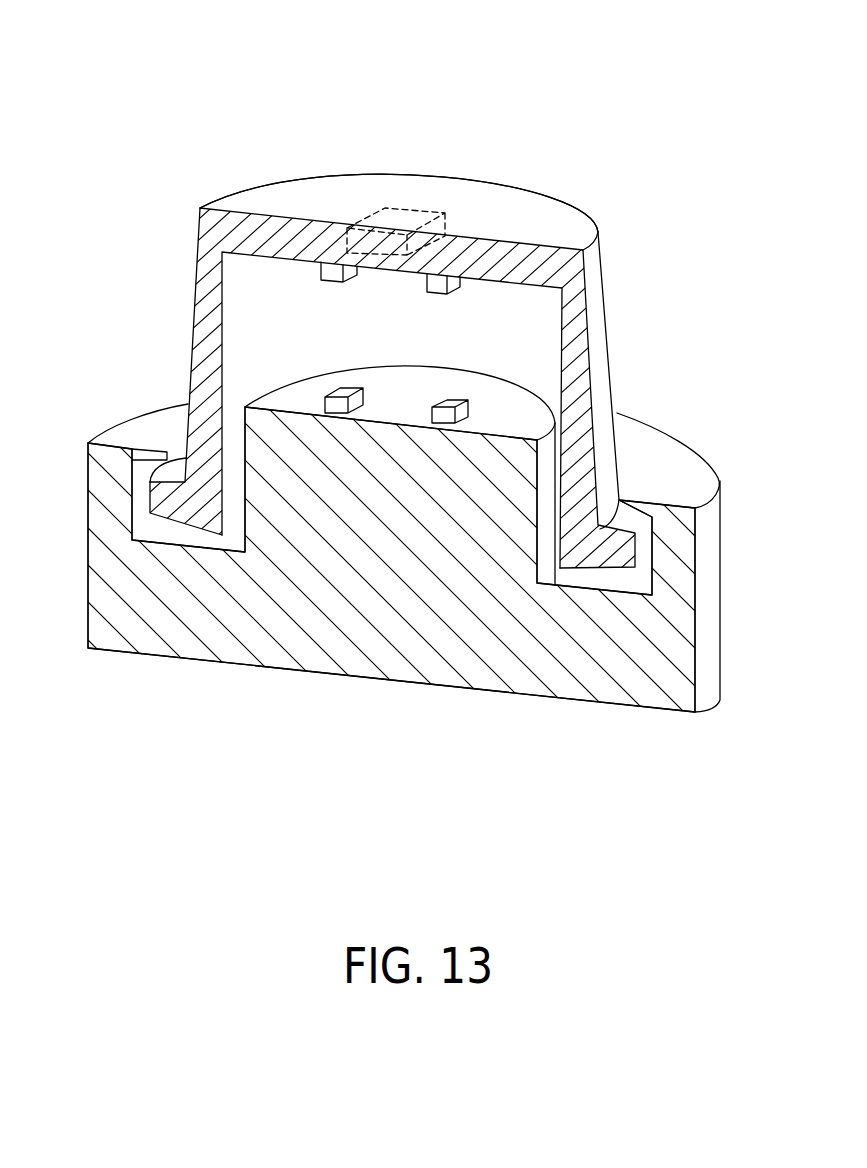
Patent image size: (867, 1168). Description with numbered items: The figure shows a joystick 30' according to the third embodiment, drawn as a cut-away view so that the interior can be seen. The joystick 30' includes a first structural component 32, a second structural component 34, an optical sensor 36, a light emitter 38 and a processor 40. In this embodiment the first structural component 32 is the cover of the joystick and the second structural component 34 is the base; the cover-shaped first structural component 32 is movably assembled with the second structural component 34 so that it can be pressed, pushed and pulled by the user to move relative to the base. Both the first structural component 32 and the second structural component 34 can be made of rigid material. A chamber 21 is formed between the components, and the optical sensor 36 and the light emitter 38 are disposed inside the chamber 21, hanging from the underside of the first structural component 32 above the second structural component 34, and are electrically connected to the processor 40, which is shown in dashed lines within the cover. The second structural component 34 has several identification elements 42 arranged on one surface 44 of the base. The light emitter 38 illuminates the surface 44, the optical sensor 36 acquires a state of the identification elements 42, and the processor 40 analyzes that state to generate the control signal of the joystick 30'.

The joystick 30' is at (439, 360).
The chamber 21 is at (527, 331).
The first structural component 32 is at (557, 221).
The second structural component 34 is at (180, 638).
The optical sensor 36 is at (334, 267).
The light emitter 38 is at (441, 283).
The processor 40 is at (395, 218).
The identification elements 42 is at (347, 396).
The surface 44 is at (298, 388).